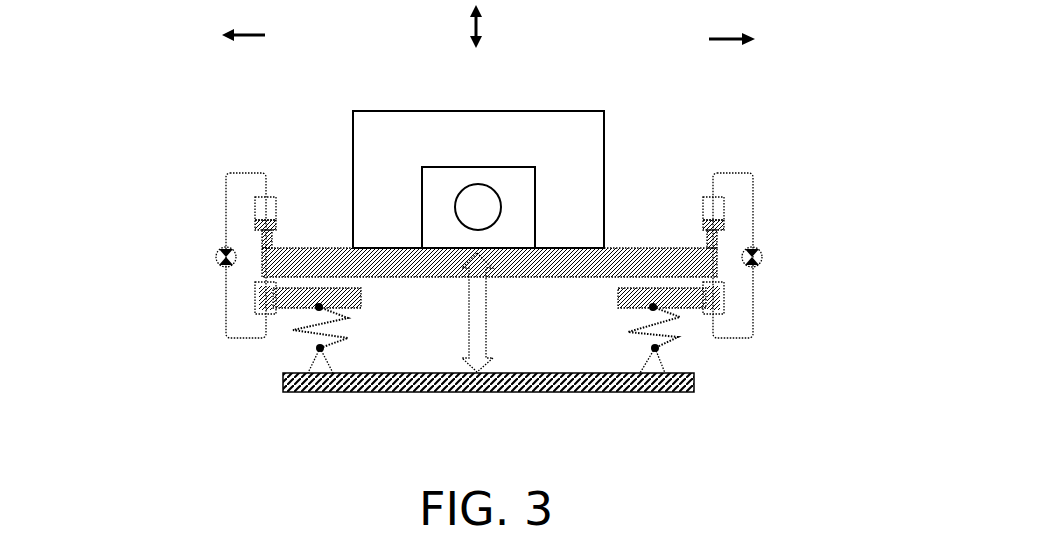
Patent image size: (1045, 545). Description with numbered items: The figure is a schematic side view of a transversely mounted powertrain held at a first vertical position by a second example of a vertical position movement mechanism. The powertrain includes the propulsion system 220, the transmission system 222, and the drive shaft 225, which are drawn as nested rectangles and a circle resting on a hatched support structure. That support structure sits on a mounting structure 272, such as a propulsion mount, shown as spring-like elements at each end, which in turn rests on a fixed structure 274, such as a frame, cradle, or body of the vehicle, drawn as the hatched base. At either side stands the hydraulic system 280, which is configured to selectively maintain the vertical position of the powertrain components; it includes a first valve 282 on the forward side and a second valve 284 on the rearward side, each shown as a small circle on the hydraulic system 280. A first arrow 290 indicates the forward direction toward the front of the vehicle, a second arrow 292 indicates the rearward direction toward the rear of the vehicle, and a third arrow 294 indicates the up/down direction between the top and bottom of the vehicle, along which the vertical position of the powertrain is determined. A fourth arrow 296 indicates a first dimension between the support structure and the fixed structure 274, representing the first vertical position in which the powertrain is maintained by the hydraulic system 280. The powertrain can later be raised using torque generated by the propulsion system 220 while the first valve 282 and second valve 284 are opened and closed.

The propulsion system 220 is at (563, 110).
The transmission system 222 is at (537, 183).
The drive shaft 225 is at (460, 185).
The mounting structure 272 is at (313, 333).
The fixed structure 274 is at (612, 393).
The hydraulic system 280 is at (210, 210).
The first valve 282 is at (218, 262).
The second valve 284 is at (762, 262).
The first arrow 290 is at (248, 33).
The second arrow 292 is at (724, 35).
The third arrow 294 is at (480, 22).
The fourth arrow 296 is at (487, 323).